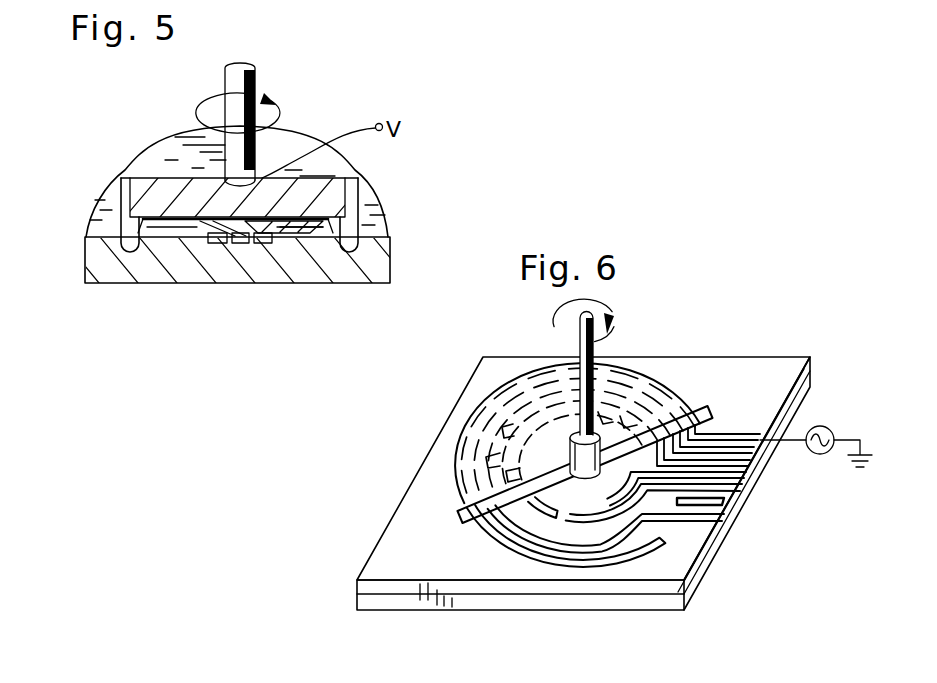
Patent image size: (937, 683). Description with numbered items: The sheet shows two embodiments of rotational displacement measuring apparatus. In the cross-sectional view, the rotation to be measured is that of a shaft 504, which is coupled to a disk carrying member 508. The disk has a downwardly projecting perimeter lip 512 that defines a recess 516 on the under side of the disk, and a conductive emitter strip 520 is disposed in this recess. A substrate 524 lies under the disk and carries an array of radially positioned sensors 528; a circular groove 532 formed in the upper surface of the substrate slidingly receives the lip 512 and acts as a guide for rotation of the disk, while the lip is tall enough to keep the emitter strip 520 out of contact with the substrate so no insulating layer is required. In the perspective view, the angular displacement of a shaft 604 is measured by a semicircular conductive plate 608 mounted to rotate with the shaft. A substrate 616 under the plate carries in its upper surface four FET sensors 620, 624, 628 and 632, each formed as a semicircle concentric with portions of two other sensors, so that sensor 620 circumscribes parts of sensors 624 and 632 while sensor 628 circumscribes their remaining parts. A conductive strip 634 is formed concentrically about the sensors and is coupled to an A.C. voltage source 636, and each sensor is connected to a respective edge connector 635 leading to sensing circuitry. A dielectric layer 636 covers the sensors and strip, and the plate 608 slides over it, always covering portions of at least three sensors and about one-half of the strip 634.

In FIG. 5, the shaft 504 is at (245, 86).
In FIG. 5, the disk carrying member 508 is at (358, 182).
In FIG. 5, the perimeter lip 512 is at (378, 214).
In FIG. 5, the circular groove 532 is at (122, 230).
In FIG. 5, the substrate 524 is at (85, 255).
In FIG. 5, the recess 516 is at (160, 242).
In FIG. 5, the sensors 528 is at (262, 244).
In FIG. 5, the conductive emitter strip 520 is at (305, 238).
In FIG. 6, the shaft 604 is at (594, 346).
In FIG. 6, the semicircular conductive plate 608 is at (458, 517).
In FIG. 6, the substrate 616 is at (696, 597).
In FIG. 6, the FET sensor 620 is at (563, 542).
In FIG. 6, the FET sensor 624 is at (716, 558).
In FIG. 6, the FET sensor 628 is at (747, 449).
In FIG. 6, the FET sensor 632 is at (500, 560).
In FIG. 6, the conductive strip 634 is at (715, 425).
In FIG. 6, the edge connector 635 is at (748, 520).
In FIG. 6, the A.C. electrical voltage source 636 is at (822, 427).